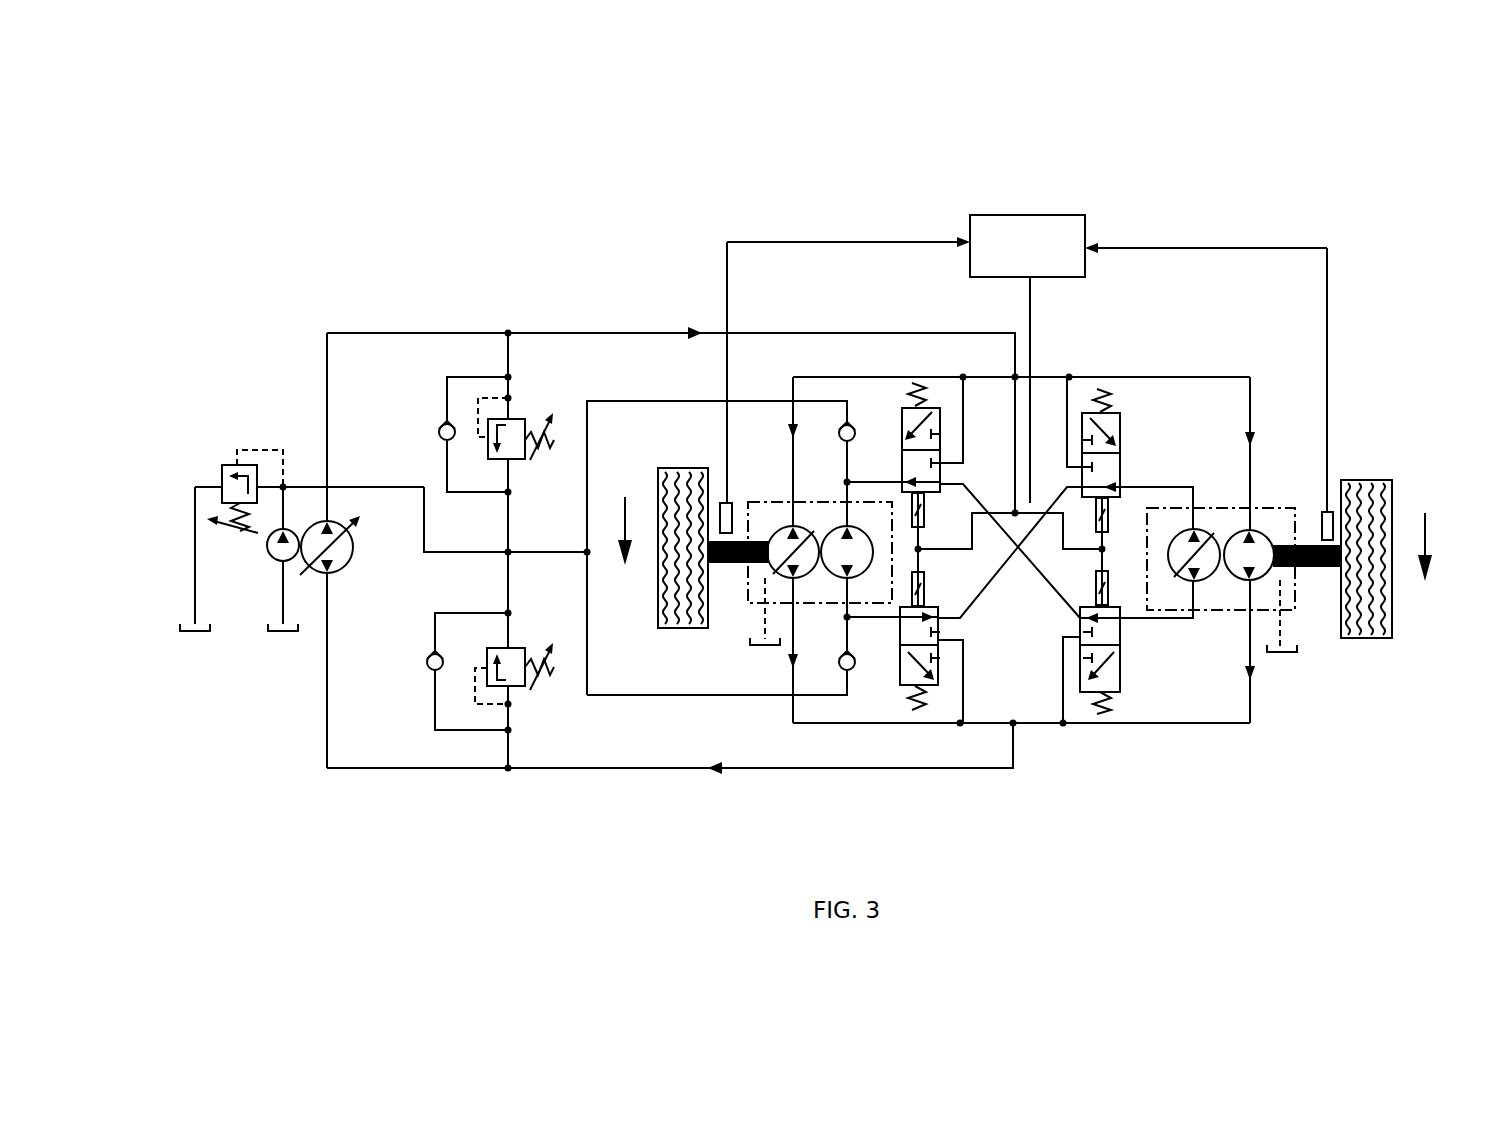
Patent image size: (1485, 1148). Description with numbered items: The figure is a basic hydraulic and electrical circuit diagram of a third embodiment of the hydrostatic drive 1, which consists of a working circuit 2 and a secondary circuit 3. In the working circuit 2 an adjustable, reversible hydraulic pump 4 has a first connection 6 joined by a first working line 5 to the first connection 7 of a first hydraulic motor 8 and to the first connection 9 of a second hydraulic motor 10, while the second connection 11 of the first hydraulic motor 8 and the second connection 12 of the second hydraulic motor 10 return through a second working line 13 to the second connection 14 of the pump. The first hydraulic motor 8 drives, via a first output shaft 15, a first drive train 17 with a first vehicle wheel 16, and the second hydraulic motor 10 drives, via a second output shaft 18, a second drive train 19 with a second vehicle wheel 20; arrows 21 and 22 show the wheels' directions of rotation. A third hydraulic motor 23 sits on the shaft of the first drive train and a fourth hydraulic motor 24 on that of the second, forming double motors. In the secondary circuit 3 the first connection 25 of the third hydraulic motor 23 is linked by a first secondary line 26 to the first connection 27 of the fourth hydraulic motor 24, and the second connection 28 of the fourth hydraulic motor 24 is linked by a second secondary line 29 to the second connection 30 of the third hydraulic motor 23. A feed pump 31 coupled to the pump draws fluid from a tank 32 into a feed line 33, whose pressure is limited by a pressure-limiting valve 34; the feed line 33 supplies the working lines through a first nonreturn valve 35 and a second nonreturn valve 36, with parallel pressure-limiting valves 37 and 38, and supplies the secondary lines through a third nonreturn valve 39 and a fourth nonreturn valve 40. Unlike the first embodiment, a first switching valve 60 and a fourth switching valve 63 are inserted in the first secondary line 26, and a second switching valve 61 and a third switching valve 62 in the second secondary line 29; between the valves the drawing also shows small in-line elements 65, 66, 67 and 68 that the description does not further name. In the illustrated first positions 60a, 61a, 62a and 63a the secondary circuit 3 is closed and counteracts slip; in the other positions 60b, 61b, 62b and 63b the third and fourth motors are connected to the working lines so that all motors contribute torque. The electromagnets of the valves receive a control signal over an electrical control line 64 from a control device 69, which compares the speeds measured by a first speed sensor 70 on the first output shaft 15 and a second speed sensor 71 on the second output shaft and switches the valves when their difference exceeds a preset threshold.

The hydrostatic drive 1 is at (628, 288).
The working circuit 2 is at (480, 318).
The secondary circuit 3 is at (1004, 586).
The hydraulic pump 4 is at (346, 554).
The first working line 5 is at (878, 331).
The first connection of the hydraulic pump 6 is at (340, 522).
The first connection of the first hydraulic motor 7 is at (791, 522).
The first hydraulic motor 8 is at (782, 537).
The first connection of the second hydraulic motor 9 is at (1251, 527).
The second hydraulic motor 10 is at (1258, 553).
The second connection of the first hydraulic motor 11 is at (797, 574).
The second connection of the second hydraulic motor 12 is at (1247, 592).
The second working line 13 is at (802, 771).
The second connection of the hydraulic pump 14 is at (330, 578).
The first output shaft 15 is at (730, 563).
The first vehicle wheel 16 is at (686, 470).
The first drive train 17 is at (654, 451).
The second output shaft 18 is at (1316, 570).
The second drive train 19 is at (1402, 476).
The second vehicle wheel 20 is at (1371, 480).
The arrow 21 is at (622, 522).
The arrow 22 is at (1428, 526).
The third hydraulic motor 23 is at (856, 564).
The fourth hydraulic motor 24 is at (1183, 577).
The first connection of the third hydraulic motor 25 is at (851, 527).
The first secondary line 26 is at (1042, 594).
The first connection of the fourth hydraulic motor 27 is at (1196, 584).
The second connection of the fourth hydraulic motor 28 is at (1195, 523).
The second secondary line 29 is at (1058, 498).
The second connection of the third hydraulic motor 30 is at (843, 583).
The feed pump 31 is at (277, 551).
The tank 32 is at (200, 634).
The feed line 33 is at (430, 520).
The pressure-limiting valve 34 is at (237, 470).
The first nonreturn valve 35 is at (440, 426).
The second nonreturn valve 36 is at (428, 672).
The pressure-limiting valve 37 is at (516, 451).
The pressure-limiting valve 38 is at (522, 648).
The third nonreturn valve 39 is at (860, 432).
The fourth nonreturn valve 40 is at (838, 661).
The first 3/2-way switching valve 60 is at (950, 429).
The first valve position of the first switching valve 60a is at (914, 468).
The other switching position of the first switching valve 60b is at (906, 398).
The second 3/2-way switching valve 61 is at (952, 662).
The first valve position of the second switching valve 61a is at (904, 633).
The other switching position of the second switching valve 61b is at (906, 682).
The third 3/2-way switching valve 62 is at (1135, 439).
The first valve position of the third switching valve 62a is at (1100, 467).
The other switching position of the third switching valve 62b is at (1118, 420).
The fourth 3/2-way switching valve 63 is at (1143, 679).
The first valve position of the fourth switching valve 63a is at (1111, 634).
The other switching position of the fourth switching valve 63b is at (1111, 682).
The electrical control line 64 is at (1034, 396).
The throttle 65 is at (926, 507).
The throttle 66 is at (923, 597).
The throttle 67 is at (1094, 596).
The throttle 68 is at (1094, 534).
The control device 69 is at (1083, 257).
The first speed sensor 70 is at (724, 500).
The second speed sensor 71 is at (1322, 508).